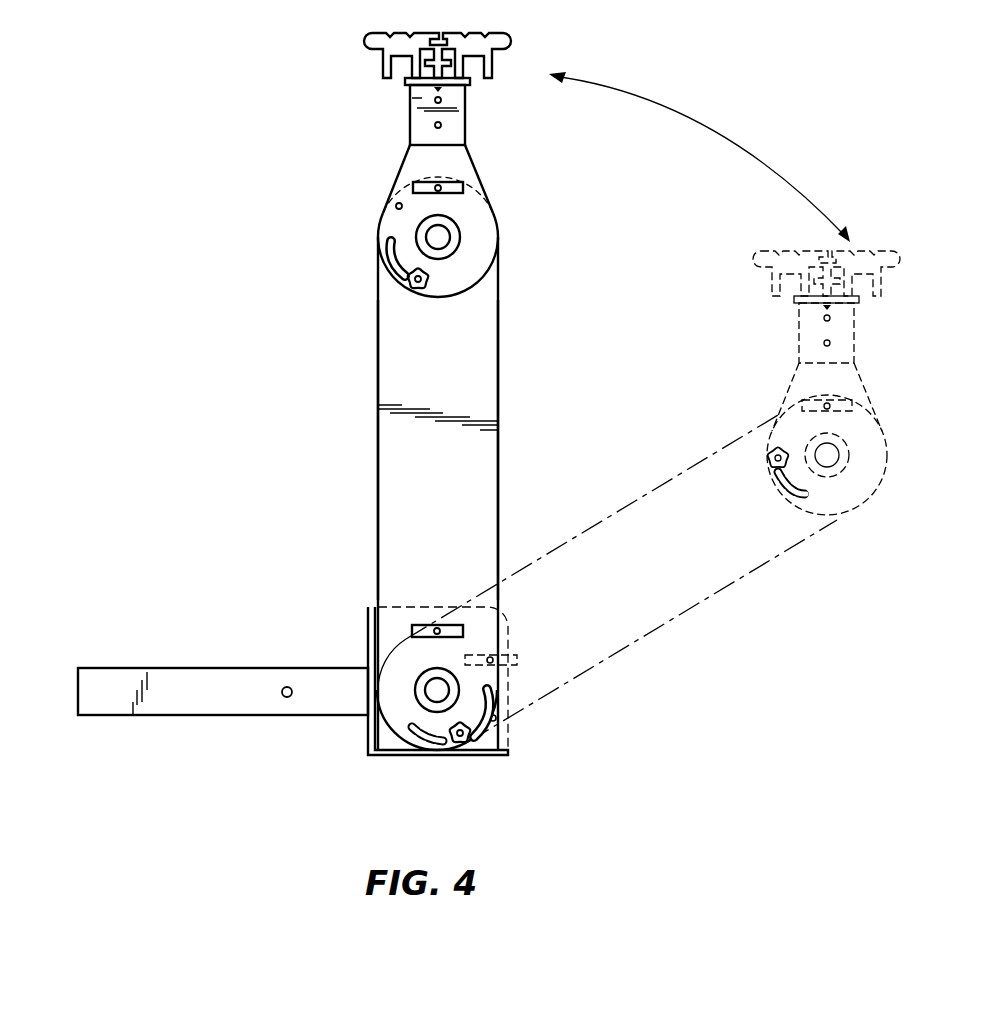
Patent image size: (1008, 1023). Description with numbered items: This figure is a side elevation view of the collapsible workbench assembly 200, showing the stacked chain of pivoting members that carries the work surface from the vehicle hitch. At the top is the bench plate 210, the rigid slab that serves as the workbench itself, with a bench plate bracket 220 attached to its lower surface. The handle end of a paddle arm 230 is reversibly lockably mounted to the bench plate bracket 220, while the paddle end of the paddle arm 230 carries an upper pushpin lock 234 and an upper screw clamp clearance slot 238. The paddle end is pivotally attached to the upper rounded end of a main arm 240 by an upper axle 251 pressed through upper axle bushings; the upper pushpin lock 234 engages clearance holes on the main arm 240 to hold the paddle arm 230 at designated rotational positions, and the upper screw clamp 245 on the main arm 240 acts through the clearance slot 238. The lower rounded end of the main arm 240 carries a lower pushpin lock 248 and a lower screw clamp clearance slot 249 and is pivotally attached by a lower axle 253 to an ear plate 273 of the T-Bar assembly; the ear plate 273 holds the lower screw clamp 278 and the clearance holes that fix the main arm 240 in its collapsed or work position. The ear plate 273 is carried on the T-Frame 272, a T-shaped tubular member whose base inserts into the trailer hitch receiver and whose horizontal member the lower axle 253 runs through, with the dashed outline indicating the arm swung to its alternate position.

The collapsible workbench assembly 200 is at (132, 306).
The bench plate 210 is at (365, 44).
The bench plate bracket 220 is at (410, 97).
The paddle arm 230 is at (405, 167).
The upper pushpin lock 234 is at (463, 190).
The upper screw clamp clearance slot 238 is at (384, 255).
The upper screw clamp 245 is at (408, 281).
The upper axle 251 is at (445, 240).
The main arm 240 is at (383, 432).
The lower pushpin lock 248 is at (412, 631).
The lower axle 253 is at (430, 690).
The lower screw clamp clearance slot 249 is at (432, 756).
The lower screw clamp 278 is at (462, 752).
The ear plate 273 is at (505, 737).
The T-Frame 272 is at (205, 700).